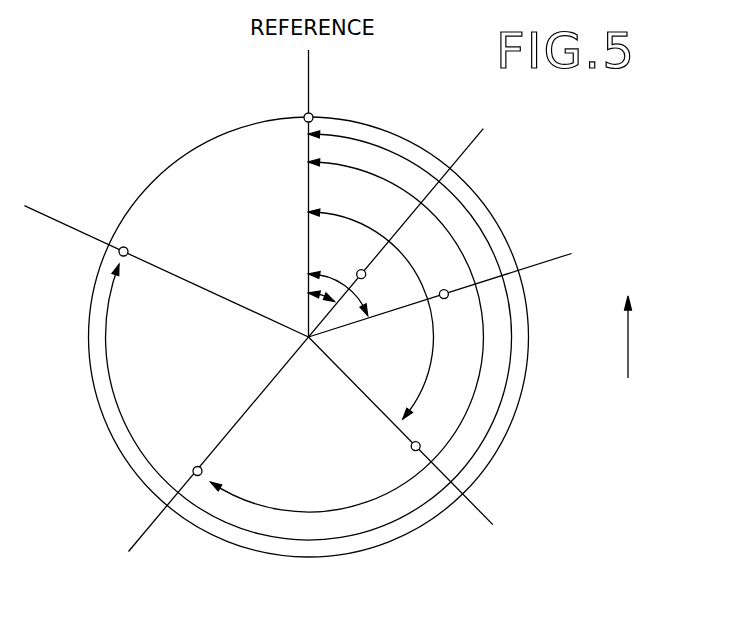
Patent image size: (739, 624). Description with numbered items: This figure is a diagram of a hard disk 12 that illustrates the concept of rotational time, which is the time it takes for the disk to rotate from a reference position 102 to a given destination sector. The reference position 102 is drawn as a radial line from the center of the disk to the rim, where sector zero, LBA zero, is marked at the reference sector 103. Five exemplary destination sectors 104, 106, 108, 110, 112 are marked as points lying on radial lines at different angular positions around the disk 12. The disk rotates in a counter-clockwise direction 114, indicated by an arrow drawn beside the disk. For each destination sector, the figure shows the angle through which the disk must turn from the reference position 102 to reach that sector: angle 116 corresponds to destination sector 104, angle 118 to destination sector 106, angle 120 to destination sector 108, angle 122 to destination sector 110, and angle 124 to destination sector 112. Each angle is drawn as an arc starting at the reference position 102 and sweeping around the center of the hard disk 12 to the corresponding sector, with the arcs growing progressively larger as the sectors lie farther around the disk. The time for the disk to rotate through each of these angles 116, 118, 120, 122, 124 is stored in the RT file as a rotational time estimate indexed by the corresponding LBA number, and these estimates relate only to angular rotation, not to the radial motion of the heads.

The hard disk 12 is at (498, 223).
The reference position 102 is at (310, 78).
The reference sector 103 is at (312, 114).
The destination sector 104 is at (365, 272).
The destination sector 106 is at (446, 300).
The destination sector 108 is at (412, 449).
The destination sector 110 is at (198, 466).
The destination sector 112 is at (126, 247).
The counter-clockwise direction 114 is at (630, 348).
The angle 116 is at (309, 300).
The angle 118 is at (308, 282).
The angle 120 is at (330, 221).
The angle 122 is at (340, 165).
The angle 124 is at (356, 140).